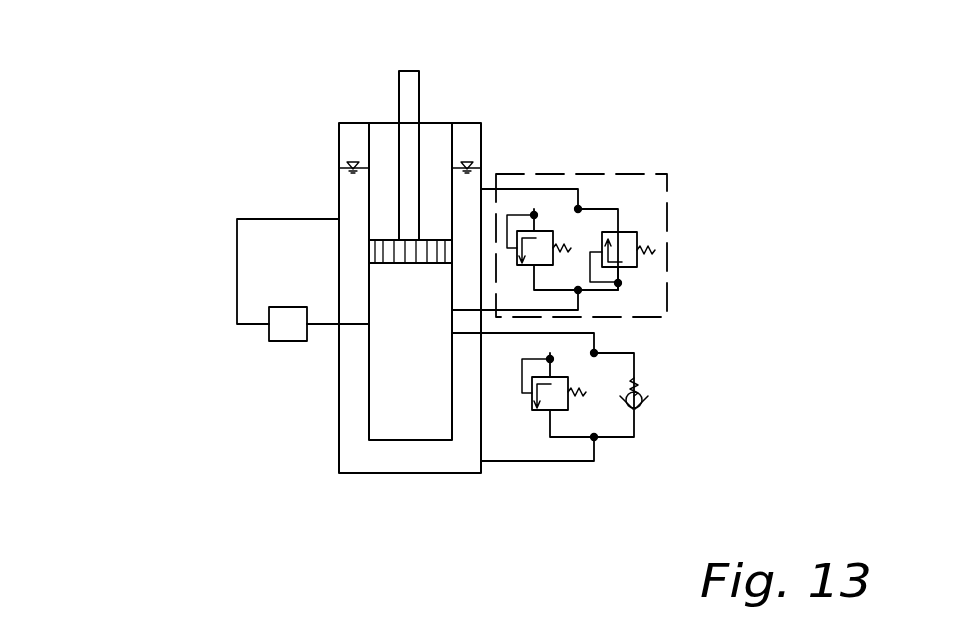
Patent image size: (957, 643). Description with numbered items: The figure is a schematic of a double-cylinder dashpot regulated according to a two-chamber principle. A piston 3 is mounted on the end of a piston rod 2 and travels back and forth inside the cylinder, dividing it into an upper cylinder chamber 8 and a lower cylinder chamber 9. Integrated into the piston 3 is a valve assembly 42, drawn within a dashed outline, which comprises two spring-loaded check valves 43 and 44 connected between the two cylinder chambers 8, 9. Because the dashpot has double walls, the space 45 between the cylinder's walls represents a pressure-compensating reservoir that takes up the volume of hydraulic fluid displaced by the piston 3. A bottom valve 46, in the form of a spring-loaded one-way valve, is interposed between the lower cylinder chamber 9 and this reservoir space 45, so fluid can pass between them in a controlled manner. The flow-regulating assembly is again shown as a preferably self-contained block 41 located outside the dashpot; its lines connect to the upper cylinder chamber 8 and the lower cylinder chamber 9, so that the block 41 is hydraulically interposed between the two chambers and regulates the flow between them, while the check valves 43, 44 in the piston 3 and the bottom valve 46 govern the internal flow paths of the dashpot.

The piston rod 2 is at (407, 84).
The piston 3 is at (373, 245).
The cylinder chamber 8 is at (385, 157).
The lower cylinder chamber 9 is at (388, 375).
The flow-regulating block 41 is at (273, 350).
The valve assembly 42 is at (612, 172).
The spring-loaded check valve 43 is at (535, 228).
The spring-loaded check valve 44 is at (627, 230).
The space between the cylinder's walls 45 is at (352, 358).
The bottom valve 46 is at (661, 372).